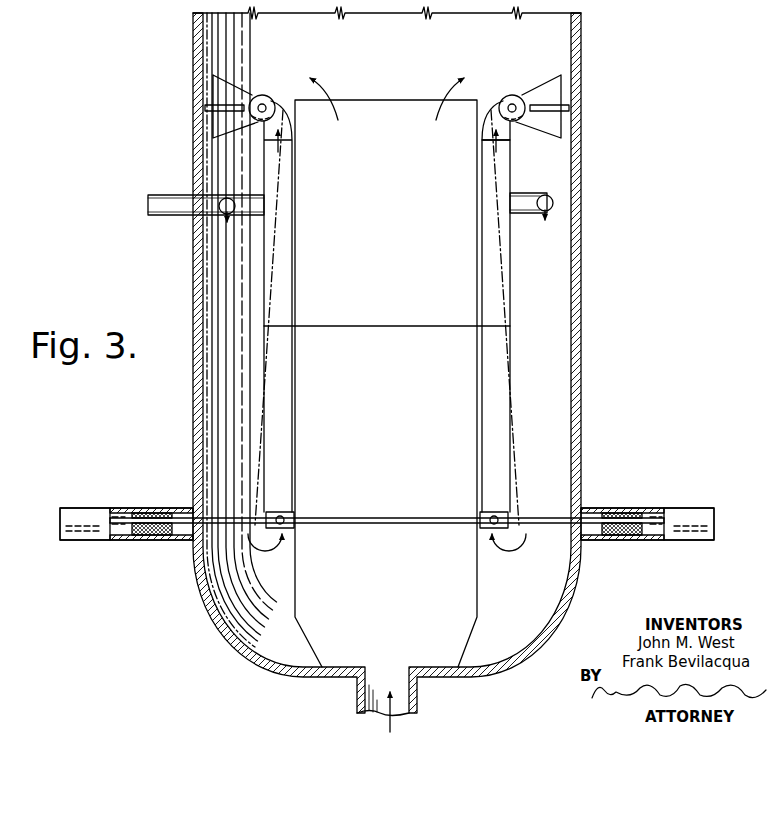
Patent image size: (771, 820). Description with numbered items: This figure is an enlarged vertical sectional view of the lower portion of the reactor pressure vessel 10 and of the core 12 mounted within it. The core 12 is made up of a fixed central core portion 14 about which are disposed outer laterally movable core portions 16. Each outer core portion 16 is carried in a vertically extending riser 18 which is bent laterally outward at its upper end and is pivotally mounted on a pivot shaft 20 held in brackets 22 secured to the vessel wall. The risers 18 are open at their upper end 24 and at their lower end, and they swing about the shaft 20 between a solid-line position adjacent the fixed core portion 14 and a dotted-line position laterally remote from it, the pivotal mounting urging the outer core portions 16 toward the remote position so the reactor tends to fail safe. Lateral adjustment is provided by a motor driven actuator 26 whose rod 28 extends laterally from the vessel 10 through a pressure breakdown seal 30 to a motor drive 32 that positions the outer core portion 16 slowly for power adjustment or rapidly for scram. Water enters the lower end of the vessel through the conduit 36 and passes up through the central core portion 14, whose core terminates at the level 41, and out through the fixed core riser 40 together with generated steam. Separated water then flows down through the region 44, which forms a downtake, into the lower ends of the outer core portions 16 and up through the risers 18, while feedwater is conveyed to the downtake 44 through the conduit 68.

The reactor pressure vessel 10 is at (194, 160).
The core 12 is at (226, 306).
The fixed central core portion 14 is at (433, 340).
The outer laterally movable core portion 16 is at (262, 386).
The riser 18 is at (510, 254).
The pivot shaft 20 is at (264, 105).
The bracket 22 is at (242, 78).
The upper end of riser 24 is at (495, 133).
The motor driven actuator 26 is at (126, 506).
The rod 28 is at (181, 516).
The pressure breakdown seal 30 is at (157, 541).
The motor drive 32 is at (78, 508).
The conduit 36 is at (423, 695).
The fixed core riser 40 is at (297, 121).
The upper level of core 41 is at (343, 323).
The downtake region 44 is at (210, 247).
The conduit 68 is at (165, 195).